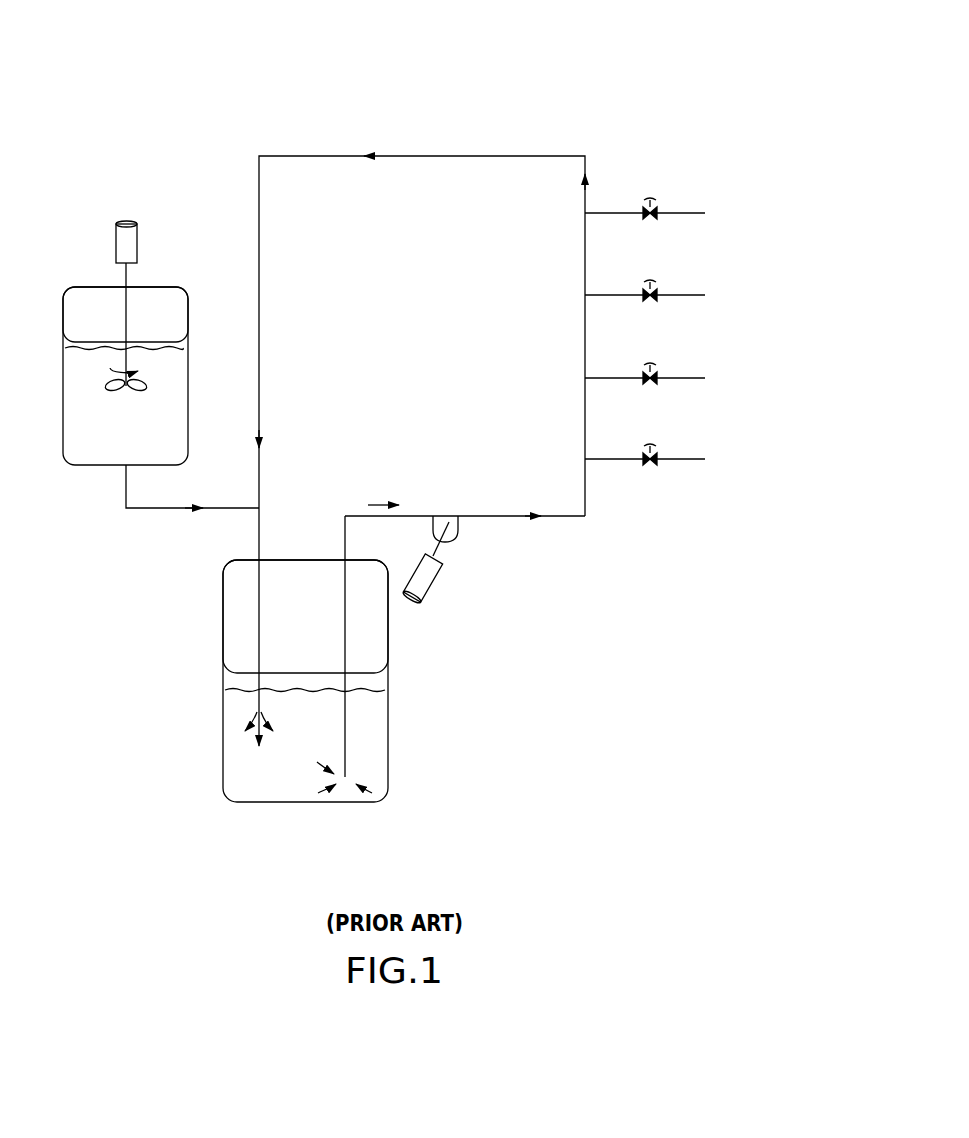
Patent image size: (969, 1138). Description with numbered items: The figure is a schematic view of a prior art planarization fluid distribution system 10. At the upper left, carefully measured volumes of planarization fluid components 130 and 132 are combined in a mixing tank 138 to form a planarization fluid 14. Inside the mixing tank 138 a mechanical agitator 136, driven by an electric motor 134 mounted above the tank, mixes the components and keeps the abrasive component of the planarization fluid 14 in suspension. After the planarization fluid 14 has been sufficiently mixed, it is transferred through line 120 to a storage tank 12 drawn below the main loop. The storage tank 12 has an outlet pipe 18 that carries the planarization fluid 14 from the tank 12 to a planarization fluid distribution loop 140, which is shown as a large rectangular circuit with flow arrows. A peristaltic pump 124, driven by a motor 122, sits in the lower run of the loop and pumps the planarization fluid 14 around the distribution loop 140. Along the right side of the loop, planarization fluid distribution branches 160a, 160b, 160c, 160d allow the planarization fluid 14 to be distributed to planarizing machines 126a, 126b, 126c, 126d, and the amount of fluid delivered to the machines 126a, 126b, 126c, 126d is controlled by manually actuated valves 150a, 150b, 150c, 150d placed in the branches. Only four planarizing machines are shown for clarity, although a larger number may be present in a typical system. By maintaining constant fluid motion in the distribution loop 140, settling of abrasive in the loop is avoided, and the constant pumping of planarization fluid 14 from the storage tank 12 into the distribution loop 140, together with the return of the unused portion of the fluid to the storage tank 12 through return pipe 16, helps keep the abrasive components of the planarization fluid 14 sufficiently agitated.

The prior art beverage processing system 10 is at (670, 106).
The storage tank 12 is at (390, 728).
The planarization fluid 14 is at (138, 437).
The return pipe 16 is at (260, 625).
The outlet pipe 18 is at (344, 640).
The line 120 is at (160, 510).
The motor 122 is at (430, 580).
The peristaltic pump 124 is at (458, 522).
The planarizing machine 126a is at (721, 459).
The planarizing machine 126b is at (721, 378).
The planarizing machine 126c is at (721, 295).
The planarizing machine 126d is at (721, 213).
The planarization fluid component 130 is at (160, 308).
The planarization fluid component 132 is at (92, 308).
The electric motor 134 is at (127, 220).
The mechanical agitator 136 is at (138, 388).
The mixing tank 138 is at (63, 400).
The planarization fluid distribution loop 140 is at (430, 156).
The manually actuated valve 150a is at (656, 464).
The manually actuated valve 150b is at (656, 383).
The manually actuated valve 150c is at (656, 300).
The manually actuated valve 150d is at (656, 218).
The planarization fluid distribution branch 160a is at (607, 459).
The planarization fluid distribution branch 160b is at (607, 378).
The planarization fluid distribution branch 160c is at (607, 295).
The planarization fluid distribution branch 160d is at (607, 213).